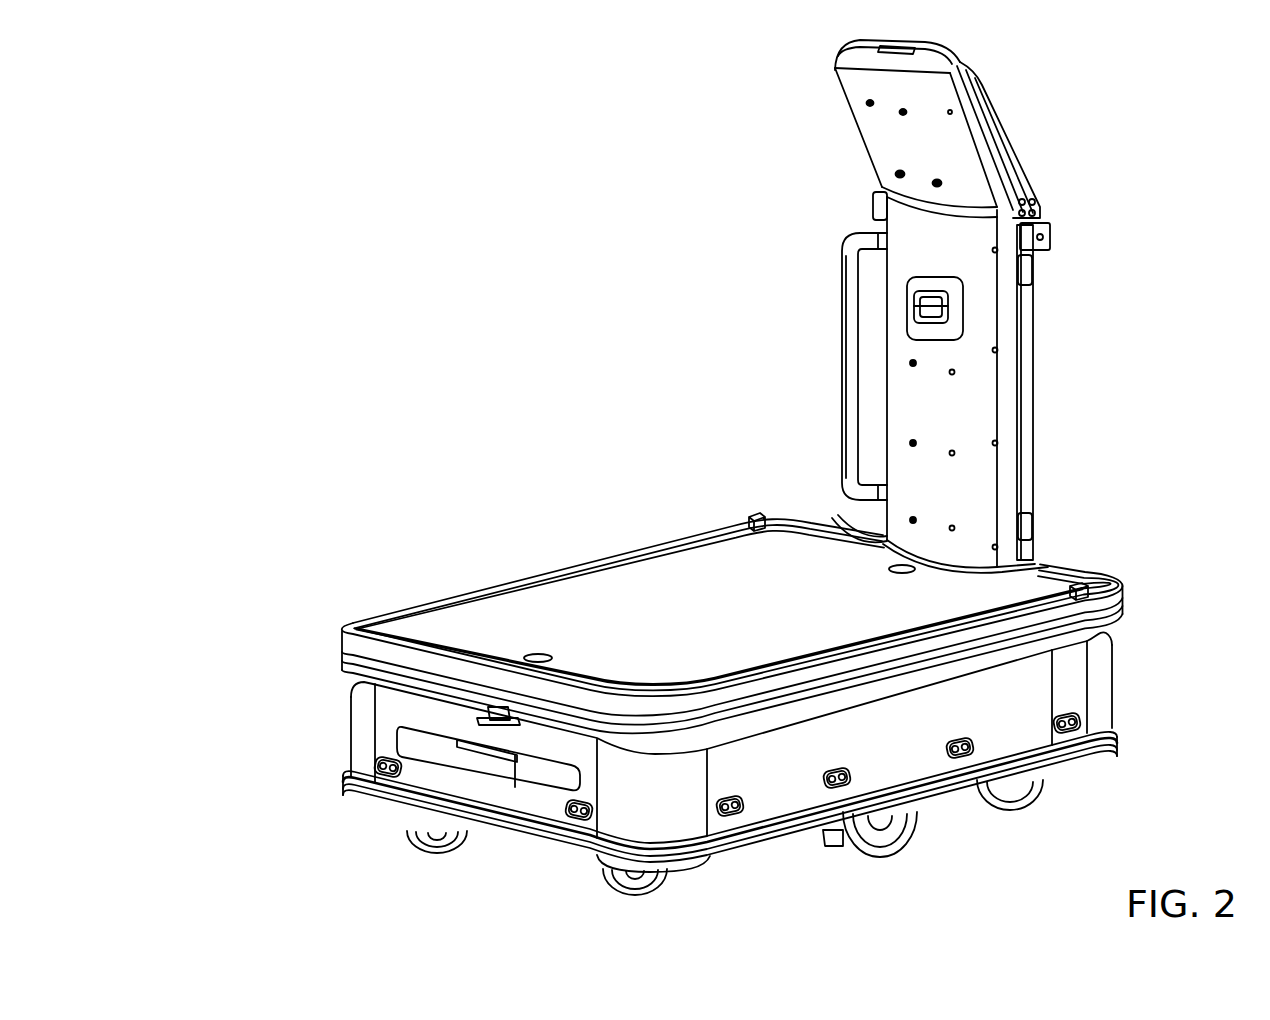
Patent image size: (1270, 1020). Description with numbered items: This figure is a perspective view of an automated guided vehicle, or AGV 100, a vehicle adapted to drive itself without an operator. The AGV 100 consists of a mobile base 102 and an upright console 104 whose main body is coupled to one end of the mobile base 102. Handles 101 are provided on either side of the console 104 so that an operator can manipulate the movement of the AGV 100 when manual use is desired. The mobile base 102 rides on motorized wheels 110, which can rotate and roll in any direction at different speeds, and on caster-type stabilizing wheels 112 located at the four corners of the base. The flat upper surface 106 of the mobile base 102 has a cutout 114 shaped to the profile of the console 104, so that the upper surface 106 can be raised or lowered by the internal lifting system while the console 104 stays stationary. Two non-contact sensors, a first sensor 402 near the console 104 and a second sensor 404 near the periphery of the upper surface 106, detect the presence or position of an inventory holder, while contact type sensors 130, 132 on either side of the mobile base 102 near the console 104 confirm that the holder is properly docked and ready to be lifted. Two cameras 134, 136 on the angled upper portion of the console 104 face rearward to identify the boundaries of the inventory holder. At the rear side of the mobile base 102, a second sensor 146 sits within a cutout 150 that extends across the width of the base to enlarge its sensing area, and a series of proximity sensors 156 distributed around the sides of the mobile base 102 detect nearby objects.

The automated guided vehicle (AGV) 100 is at (310, 296).
The handle 101 is at (855, 287).
The mobile base 102 is at (1120, 694).
The console 104 is at (1124, 258).
The upper surface 106 is at (599, 586).
The motorized wheel 110 is at (887, 848).
The stabilizing wheel 112 is at (407, 835).
The cutout 114 is at (840, 522).
The contact type sensor 130 is at (750, 512).
The contact type sensor 132 is at (1086, 581).
The camera 134 is at (898, 174).
The camera 136 is at (933, 181).
The second sensor 146 is at (497, 712).
The cutout 150 is at (404, 697).
The sensor 156 is at (380, 773).
The first sensor 402 is at (888, 568).
The second sensor 404 is at (554, 658).